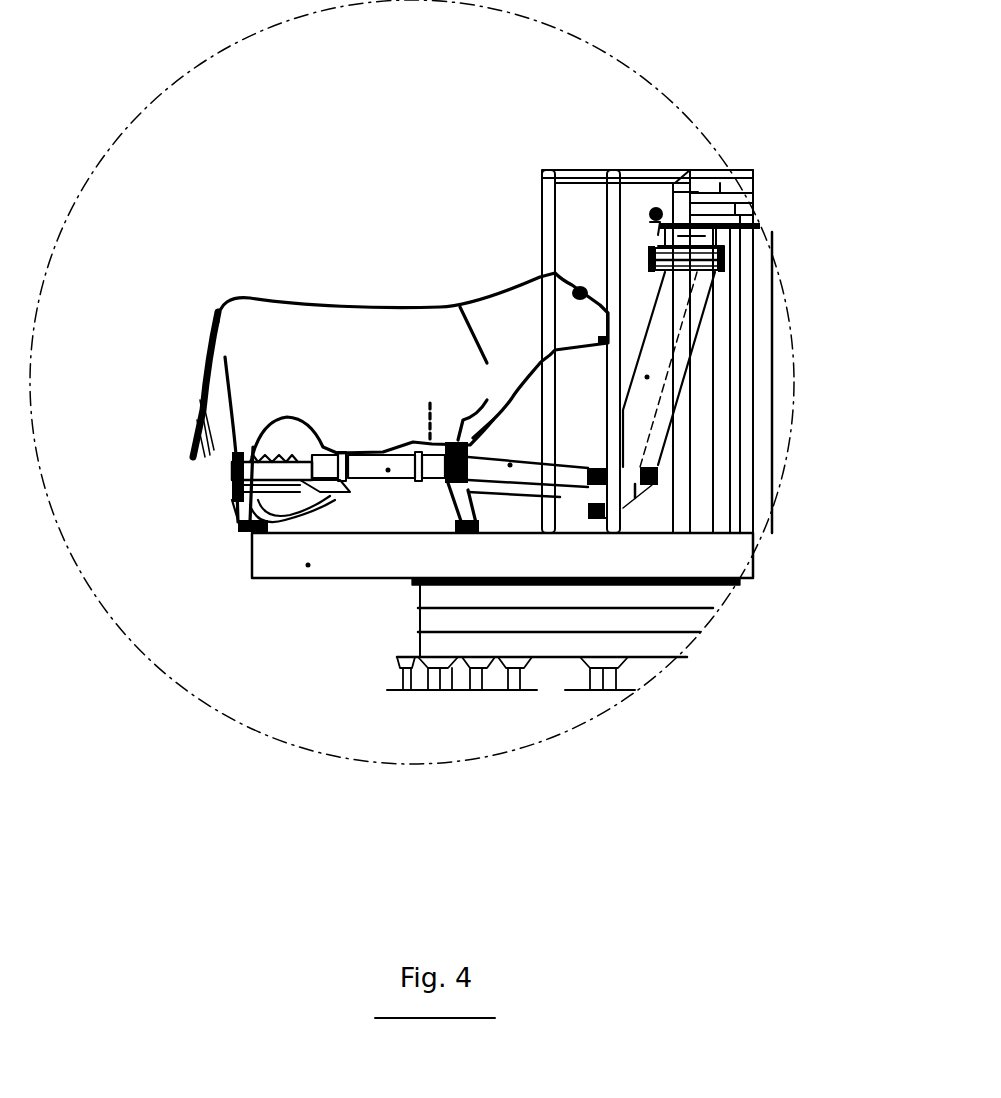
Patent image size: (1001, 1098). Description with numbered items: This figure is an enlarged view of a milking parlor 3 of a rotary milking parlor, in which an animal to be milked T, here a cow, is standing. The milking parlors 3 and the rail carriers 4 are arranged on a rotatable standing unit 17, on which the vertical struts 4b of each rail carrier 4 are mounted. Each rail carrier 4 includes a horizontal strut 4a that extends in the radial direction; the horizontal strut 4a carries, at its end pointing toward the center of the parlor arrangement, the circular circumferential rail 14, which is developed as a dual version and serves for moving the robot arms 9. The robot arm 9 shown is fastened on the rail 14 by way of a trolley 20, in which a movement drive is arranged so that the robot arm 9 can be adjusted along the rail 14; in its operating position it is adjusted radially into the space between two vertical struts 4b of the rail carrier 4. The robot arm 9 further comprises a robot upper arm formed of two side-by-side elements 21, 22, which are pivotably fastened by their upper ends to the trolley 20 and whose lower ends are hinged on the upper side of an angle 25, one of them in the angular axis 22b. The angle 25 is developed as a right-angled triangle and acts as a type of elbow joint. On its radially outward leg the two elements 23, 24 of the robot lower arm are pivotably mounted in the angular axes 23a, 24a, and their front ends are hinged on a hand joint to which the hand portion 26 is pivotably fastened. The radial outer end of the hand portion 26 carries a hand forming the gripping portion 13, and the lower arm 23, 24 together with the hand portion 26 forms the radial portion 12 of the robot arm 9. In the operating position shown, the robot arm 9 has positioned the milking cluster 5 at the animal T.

The milking parlor 3 is at (403, 183).
The rail carrier 4 is at (617, 118).
The horizontal strut 4a is at (637, 175).
The vertical struts 4b is at (540, 205).
The milking cluster 5 is at (300, 521).
The robot arm 9 is at (674, 456).
The radial portion 12 is at (424, 508).
The gripping portion 13 is at (353, 490).
The rail 14 is at (720, 228).
The standing unit 17 is at (308, 565).
The trolley 20 is at (745, 258).
The robot upper arm element 21 is at (647, 377).
The robot upper arm element 22 is at (687, 320).
The angular axis 22b is at (652, 487).
The robot lower arm element 23 is at (497, 468).
The angular axis 23a is at (585, 490).
The robot lower arm element 24 is at (527, 495).
The angular axis 24a is at (596, 520).
The angle 25 is at (636, 492).
The hand portion 26 is at (388, 470).
The animal to be milked T is at (282, 303).